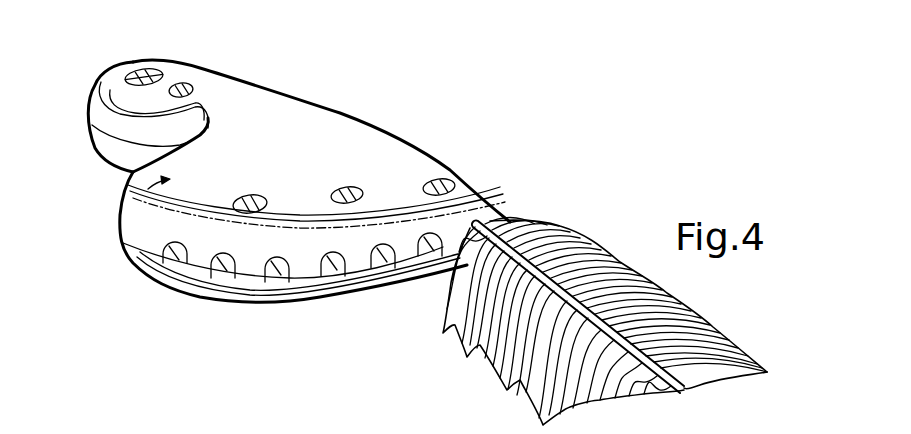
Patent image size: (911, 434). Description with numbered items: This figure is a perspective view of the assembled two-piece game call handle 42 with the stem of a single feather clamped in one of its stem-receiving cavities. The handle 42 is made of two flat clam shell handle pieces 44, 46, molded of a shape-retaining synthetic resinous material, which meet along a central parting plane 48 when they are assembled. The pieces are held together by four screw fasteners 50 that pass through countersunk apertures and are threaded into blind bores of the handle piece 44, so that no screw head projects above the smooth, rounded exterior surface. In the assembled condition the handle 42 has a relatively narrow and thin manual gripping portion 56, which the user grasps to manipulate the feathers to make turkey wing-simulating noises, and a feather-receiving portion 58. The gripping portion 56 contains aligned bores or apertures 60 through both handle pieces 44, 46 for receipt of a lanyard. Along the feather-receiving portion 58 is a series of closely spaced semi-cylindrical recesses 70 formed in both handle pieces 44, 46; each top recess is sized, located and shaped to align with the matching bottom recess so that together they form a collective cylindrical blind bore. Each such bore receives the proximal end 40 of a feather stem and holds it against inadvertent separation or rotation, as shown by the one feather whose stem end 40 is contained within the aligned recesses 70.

The proximal end of feather stem 40 is at (605, 258).
The handle 42 is at (476, 149).
The handle piece 44 is at (342, 276).
The handle piece 46 is at (116, 206).
The central parting plane 48 is at (107, 137).
The screw fastener 50 is at (176, 80).
The manual gripping portion 56 is at (187, 73).
The feather-receiving portion 58 is at (411, 238).
The lanyard apertures 60 is at (136, 62).
The feather-receiving recess 70 is at (176, 265).